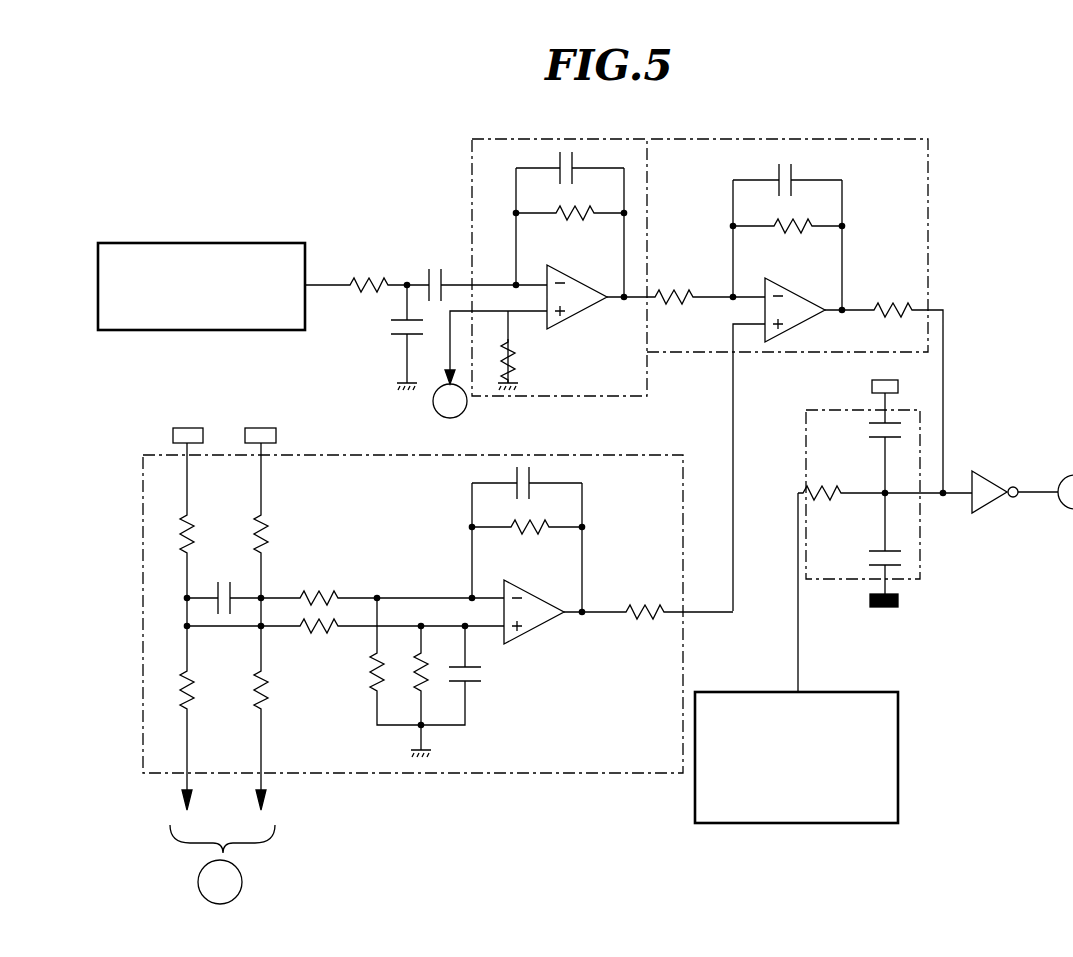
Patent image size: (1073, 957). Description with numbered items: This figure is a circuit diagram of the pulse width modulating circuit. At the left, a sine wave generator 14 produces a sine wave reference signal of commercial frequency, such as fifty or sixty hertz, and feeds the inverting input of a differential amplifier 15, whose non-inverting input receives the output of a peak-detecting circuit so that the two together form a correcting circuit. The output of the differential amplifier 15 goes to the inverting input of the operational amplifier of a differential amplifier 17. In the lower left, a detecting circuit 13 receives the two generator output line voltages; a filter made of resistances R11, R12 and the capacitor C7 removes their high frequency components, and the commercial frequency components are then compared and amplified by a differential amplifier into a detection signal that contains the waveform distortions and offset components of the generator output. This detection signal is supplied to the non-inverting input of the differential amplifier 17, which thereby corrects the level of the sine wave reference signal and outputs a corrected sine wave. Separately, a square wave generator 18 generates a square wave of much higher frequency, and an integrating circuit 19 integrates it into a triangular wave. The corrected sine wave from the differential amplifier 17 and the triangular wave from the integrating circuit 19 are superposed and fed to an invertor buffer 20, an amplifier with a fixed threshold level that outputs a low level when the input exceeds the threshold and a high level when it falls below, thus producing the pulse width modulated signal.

The detecting circuit 13 is at (438, 647).
The sine wave generator 14 is at (196, 243).
The differential amplifier 15 is at (472, 228).
The differential amplifier 17 is at (929, 190).
The square wave generator 18 is at (898, 757).
The integrating circuit 19 is at (921, 549).
The invertor buffer 20 is at (978, 517).
The capacitor C7 is at (224, 582).
The resistance R11 is at (213, 690).
The resistance R12 is at (287, 690).